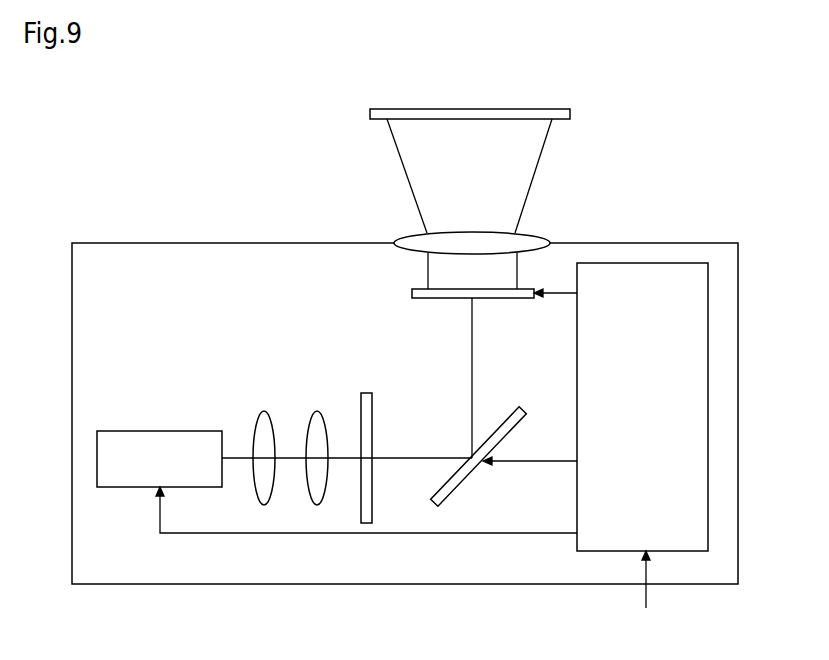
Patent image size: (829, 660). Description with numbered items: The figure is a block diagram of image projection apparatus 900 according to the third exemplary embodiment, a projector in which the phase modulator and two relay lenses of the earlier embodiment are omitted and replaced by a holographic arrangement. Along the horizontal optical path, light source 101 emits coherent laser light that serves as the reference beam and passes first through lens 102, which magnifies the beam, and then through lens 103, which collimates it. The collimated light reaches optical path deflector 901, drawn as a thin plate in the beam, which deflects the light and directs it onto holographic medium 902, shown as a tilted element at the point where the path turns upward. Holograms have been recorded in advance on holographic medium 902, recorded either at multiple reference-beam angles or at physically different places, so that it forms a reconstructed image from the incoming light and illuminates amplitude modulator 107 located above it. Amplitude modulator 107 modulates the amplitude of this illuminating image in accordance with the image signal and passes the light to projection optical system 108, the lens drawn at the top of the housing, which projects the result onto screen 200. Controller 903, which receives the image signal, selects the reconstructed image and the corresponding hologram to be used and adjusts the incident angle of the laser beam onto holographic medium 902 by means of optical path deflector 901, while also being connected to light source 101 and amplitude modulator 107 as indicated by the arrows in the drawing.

The image projection apparatus 900 is at (638, 243).
The screen 200 is at (570, 112).
The projection optical system 108 is at (410, 251).
The amplitude modulator 107 is at (450, 299).
The controller 903 is at (577, 370).
The light source 101 is at (178, 431).
The lens 102 is at (265, 410).
The lens 103 is at (315, 410).
The optical path deflector 901 is at (366, 393).
The holographic medium 902 is at (463, 483).